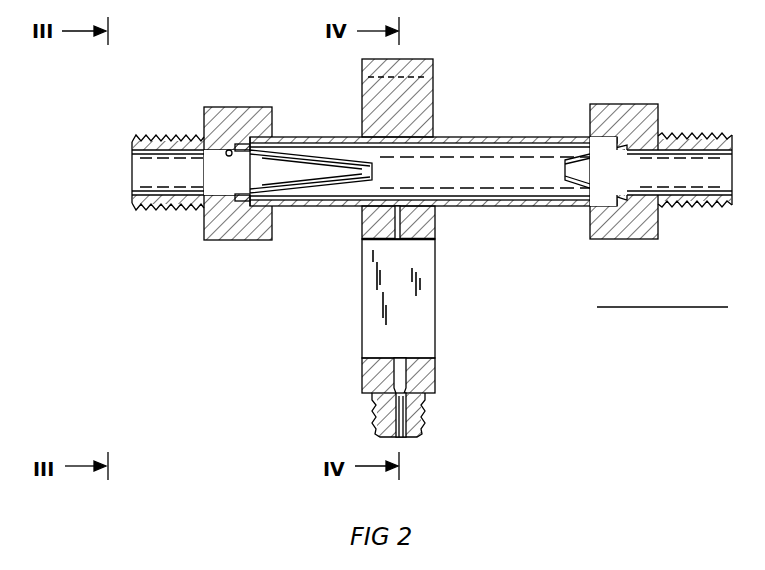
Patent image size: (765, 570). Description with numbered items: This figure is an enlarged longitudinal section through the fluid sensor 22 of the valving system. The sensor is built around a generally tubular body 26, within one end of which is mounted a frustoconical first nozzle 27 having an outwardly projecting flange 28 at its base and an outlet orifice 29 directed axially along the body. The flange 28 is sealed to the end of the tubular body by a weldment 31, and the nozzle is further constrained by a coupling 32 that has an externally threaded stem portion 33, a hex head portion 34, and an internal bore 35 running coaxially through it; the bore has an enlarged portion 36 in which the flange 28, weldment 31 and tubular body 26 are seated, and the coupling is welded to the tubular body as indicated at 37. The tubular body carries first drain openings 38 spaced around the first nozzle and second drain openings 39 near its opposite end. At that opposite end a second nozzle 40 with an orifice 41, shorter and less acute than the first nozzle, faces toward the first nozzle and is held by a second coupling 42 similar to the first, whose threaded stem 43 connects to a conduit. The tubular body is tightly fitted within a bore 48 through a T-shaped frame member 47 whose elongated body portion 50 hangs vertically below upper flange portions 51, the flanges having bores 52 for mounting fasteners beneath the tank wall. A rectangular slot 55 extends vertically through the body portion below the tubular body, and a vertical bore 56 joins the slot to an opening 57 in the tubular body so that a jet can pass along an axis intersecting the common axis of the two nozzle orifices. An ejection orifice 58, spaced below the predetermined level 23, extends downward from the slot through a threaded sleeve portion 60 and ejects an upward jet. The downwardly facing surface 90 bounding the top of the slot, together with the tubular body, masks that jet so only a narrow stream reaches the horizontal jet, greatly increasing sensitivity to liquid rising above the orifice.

The fluid sensor 22 is at (512, 280).
The predetermined level 23 is at (661, 308).
The tubular body 26 is at (477, 128).
The first nozzle 27 is at (348, 200).
The flange 28 is at (237, 205).
The outlet orifice 29 is at (374, 166).
The weldment 31 is at (258, 208).
The coupling 32 is at (208, 98).
The stem portion 33 is at (167, 135).
The head portion 34 is at (262, 106).
The internal bore 35 is at (143, 190).
The enlarged portion 36 is at (231, 150).
The welding 37 is at (277, 137).
The first drain openings 38 is at (318, 205).
The second drain openings 39 is at (544, 207).
The second nozzle 40 is at (583, 160).
The orifice 41 is at (565, 172).
The second coupling 42 is at (627, 94).
The right threaded fitting 43 is at (696, 134).
The frame member 47 is at (462, 379).
The bore 48 is at (415, 150).
The body portion 50 is at (350, 374).
The upper flange portions 51 is at (436, 68).
The bores 52 is at (410, 74).
The slot 55 is at (372, 355).
The bore 56 is at (398, 243).
The opening 57 is at (397, 212).
The ejection orifice 58 is at (398, 357).
The sleeve portion 60 is at (424, 424).
The downwardly facing surface 90 is at (362, 249).